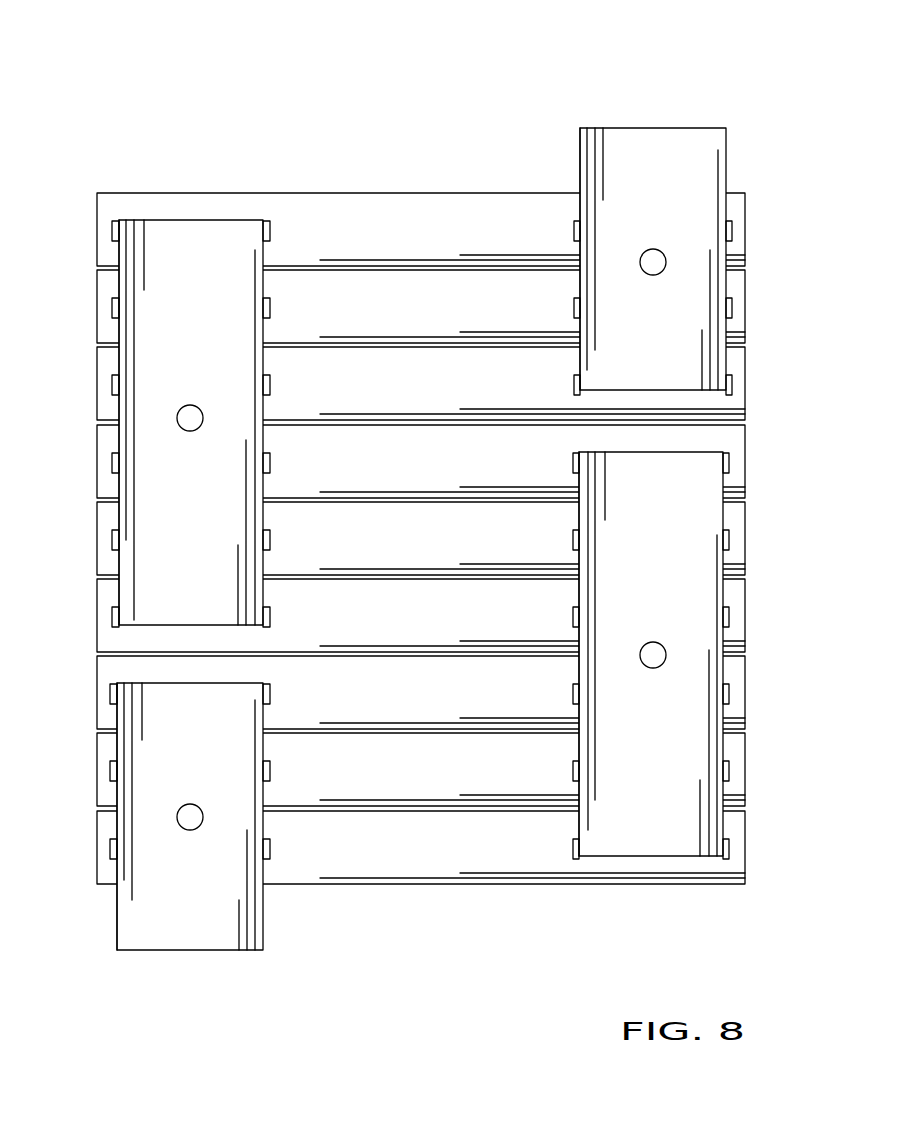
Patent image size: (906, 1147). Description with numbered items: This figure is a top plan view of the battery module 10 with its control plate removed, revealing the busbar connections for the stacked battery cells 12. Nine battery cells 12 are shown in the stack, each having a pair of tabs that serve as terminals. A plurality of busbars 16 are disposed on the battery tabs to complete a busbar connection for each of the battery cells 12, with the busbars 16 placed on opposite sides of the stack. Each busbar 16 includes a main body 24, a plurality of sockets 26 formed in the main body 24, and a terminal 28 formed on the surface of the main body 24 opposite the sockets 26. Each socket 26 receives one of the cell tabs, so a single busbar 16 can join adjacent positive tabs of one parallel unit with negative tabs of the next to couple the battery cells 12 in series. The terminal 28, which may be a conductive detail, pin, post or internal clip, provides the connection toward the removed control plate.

The battery module 10 is at (98, 58).
The battery cell 12 is at (746, 233).
The busbar 16 is at (112, 330).
The main body 24 is at (190, 240).
The socket 26 is at (111, 232).
The terminal 28 is at (190, 418).